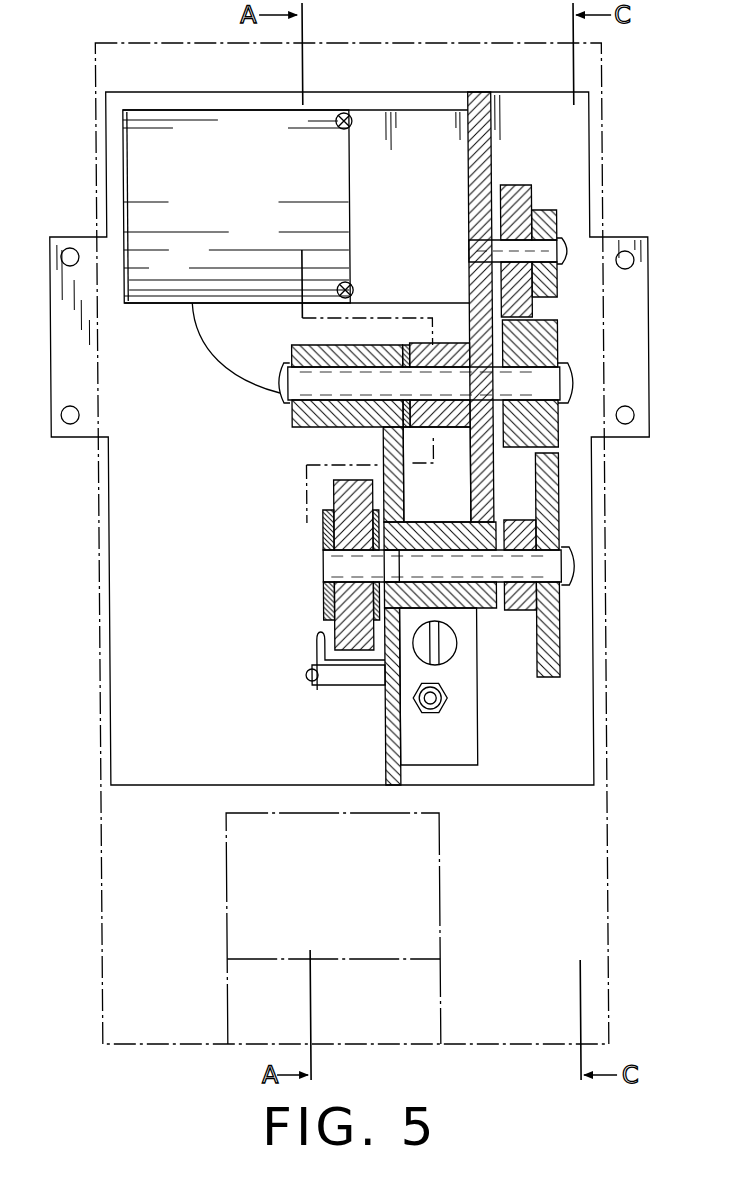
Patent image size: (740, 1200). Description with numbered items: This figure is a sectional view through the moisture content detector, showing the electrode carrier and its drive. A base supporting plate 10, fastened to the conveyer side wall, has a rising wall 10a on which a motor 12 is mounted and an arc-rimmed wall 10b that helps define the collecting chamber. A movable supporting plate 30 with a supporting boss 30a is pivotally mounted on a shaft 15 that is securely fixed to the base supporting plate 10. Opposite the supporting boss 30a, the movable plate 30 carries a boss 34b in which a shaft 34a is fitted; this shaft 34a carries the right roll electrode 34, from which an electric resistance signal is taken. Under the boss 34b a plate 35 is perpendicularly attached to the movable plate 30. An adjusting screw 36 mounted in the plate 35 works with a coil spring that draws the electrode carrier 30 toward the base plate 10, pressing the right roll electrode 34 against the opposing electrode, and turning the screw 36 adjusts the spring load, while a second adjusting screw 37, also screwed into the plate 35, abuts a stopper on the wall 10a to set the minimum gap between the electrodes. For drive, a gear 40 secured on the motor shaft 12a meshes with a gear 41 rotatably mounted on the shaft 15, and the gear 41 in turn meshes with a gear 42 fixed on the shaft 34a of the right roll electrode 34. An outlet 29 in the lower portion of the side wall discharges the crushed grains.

The base supporting plate 10 is at (482, 492).
The rising wall 10a is at (480, 173).
The arc-rimmed wall 10b is at (452, 343).
The motor 12 is at (180, 127).
The motor shaft 12a is at (538, 253).
The shaft 15 is at (530, 375).
The outlet 29 is at (392, 1020).
The movable supporting plate 30 is at (388, 438).
The supporting boss 30a is at (302, 417).
The right roll electrode 34 is at (340, 493).
The shaft 34a is at (322, 578).
The boss 34b is at (478, 600).
The plate 35 is at (453, 747).
The adjusting screw 36 is at (457, 643).
The adjusting screw 37 is at (440, 700).
The gear 40 is at (528, 302).
The gear 41 is at (540, 432).
The gear 42 is at (542, 648).